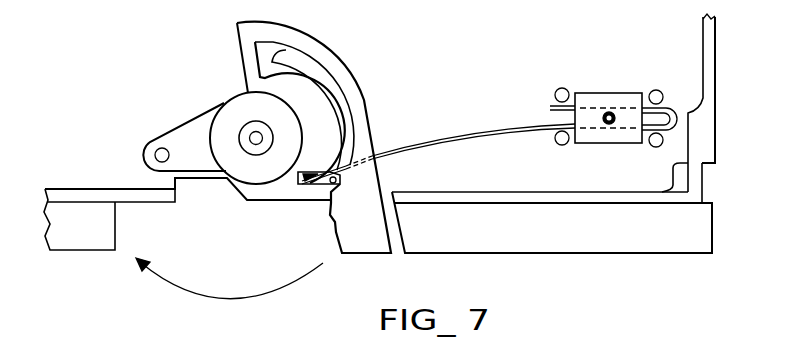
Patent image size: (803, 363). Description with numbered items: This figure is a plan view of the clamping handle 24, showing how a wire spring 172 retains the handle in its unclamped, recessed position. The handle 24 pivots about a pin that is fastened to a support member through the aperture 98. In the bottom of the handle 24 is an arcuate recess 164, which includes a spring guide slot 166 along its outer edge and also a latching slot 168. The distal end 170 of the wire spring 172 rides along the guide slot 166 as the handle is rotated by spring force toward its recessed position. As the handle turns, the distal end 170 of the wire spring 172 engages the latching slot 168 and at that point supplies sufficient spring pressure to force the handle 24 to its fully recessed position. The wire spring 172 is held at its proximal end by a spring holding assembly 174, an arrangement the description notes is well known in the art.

The clamping handle 24 is at (390, 256).
The aperture 98 is at (240, 126).
The arcuate recess 164 is at (262, 58).
The spring guide slot 166 is at (340, 95).
The latching slot 168 is at (327, 184).
The distal end 170 is at (307, 184).
The wire spring 172 is at (510, 129).
The spring holding assembly 174 is at (616, 80).